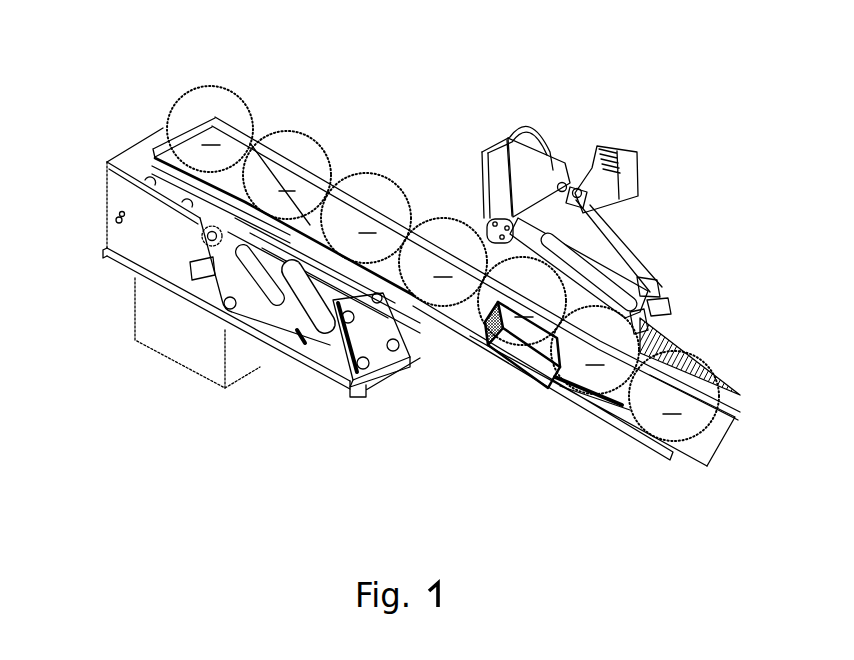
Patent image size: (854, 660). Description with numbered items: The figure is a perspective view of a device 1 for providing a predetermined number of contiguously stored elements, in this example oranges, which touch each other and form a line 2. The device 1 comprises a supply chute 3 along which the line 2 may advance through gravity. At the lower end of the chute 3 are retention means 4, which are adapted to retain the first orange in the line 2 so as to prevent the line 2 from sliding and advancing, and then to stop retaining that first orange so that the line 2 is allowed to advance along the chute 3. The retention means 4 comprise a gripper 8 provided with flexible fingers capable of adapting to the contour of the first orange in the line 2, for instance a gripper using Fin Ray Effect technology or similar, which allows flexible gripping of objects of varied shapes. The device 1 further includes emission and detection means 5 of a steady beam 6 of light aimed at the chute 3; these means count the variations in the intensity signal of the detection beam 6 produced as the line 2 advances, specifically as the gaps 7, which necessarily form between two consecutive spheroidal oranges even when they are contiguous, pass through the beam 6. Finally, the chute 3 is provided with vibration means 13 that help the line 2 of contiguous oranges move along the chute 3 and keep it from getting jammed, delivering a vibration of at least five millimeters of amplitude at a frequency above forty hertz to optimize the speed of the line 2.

The device 1 is at (476, 84).
The line 2 is at (164, 79).
The supply chute 3 is at (710, 435).
The retention means 4 is at (668, 242).
The emission and detection means 5 is at (523, 358).
The beam 6 is at (583, 393).
The gaps 7 is at (626, 408).
The gripper 8 is at (690, 342).
The vibration means 13 is at (118, 192).